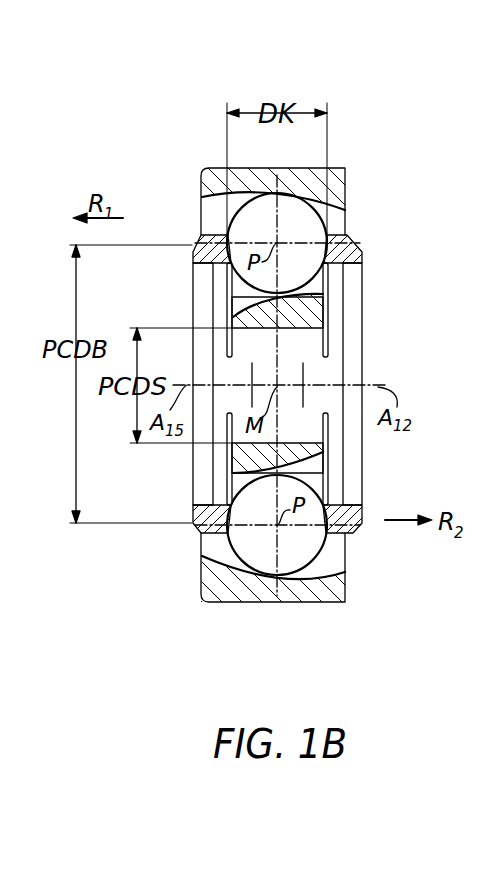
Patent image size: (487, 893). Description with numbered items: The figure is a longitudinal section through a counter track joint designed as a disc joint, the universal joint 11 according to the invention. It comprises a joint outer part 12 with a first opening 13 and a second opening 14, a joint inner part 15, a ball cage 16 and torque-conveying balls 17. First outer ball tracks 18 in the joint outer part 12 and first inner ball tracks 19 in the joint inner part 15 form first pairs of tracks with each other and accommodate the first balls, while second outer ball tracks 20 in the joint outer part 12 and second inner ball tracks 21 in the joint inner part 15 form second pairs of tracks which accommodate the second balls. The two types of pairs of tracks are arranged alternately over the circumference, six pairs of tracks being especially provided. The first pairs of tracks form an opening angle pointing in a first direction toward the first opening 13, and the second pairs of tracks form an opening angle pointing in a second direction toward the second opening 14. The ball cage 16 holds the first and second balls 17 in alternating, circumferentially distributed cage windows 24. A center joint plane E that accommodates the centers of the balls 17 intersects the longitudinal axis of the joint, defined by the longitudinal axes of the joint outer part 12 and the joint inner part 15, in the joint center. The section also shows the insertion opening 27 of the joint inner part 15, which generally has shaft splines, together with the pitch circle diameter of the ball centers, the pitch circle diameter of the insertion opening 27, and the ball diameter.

The universal joint 11 is at (380, 127).
The joint outer part 12 is at (340, 185).
The first opening 13 is at (188, 540).
The second opening 14 is at (380, 540).
The joint inner part 15 is at (315, 317).
The ball cage 16 is at (350, 240).
The torque-conveying balls 17 is at (263, 213).
The first outer ball tracks 18 is at (208, 220).
The first inner ball tracks 19 is at (245, 298).
The second outer ball tracks 20 is at (337, 562).
The second inner ball tracks 21 is at (315, 483).
The cage windows 24 is at (248, 617).
The insertion opening 27 is at (297, 328).
The center joint plane E is at (277, 547).